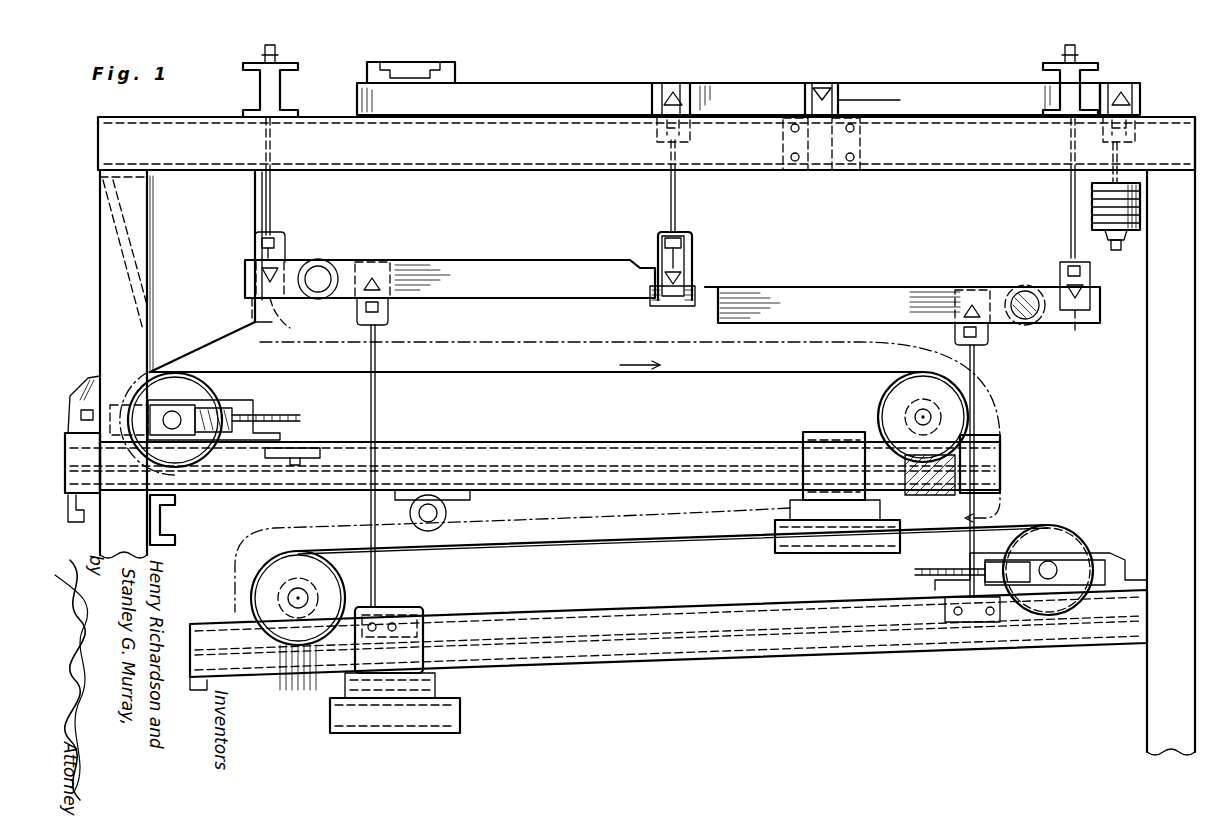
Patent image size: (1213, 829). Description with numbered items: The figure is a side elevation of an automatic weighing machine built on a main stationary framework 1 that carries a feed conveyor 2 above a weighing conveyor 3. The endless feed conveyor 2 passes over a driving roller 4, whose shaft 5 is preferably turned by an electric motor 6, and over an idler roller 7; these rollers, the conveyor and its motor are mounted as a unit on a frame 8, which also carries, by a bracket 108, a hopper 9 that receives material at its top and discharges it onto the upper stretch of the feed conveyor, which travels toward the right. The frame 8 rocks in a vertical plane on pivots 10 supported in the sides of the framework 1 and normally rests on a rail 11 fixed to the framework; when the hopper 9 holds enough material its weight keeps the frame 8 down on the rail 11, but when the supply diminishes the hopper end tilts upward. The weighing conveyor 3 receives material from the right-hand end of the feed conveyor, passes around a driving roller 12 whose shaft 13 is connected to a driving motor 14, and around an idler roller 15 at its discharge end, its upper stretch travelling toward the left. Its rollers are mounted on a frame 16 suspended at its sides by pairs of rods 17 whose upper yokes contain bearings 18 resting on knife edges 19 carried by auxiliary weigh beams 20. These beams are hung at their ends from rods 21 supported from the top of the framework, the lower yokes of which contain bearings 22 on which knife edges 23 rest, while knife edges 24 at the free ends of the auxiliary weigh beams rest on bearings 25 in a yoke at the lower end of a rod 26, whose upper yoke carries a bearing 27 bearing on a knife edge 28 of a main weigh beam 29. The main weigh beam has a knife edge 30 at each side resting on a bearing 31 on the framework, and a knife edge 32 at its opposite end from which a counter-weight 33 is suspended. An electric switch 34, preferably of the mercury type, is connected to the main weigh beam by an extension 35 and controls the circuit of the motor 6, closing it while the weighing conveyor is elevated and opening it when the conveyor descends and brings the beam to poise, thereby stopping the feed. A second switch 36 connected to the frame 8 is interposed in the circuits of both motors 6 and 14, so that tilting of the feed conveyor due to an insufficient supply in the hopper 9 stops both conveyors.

The framework 1 is at (108, 232).
The feed conveyor 2 is at (478, 368).
The weighing conveyor 3 is at (560, 545).
The driving roller 4 is at (897, 395).
The shaft 5 is at (918, 417).
The electric motor 6 is at (818, 436).
The idler roller 7 is at (195, 388).
The frame 8 is at (595, 452).
The hopper 9 is at (255, 320).
The pivots 10 is at (450, 513).
The rail 11 is at (176, 518).
The driving roller 12 is at (335, 575).
The shaft 13 is at (290, 597).
The driving motor 14 is at (410, 612).
The idler roller 15 is at (1060, 530).
The frame 16 is at (720, 650).
The rods 17 is at (388, 428).
The bearings 18 is at (380, 262).
The knife edges 19 is at (365, 290).
The auxiliary weigh beams 20 is at (490, 258).
The rods 21 is at (272, 192).
The bearings 22 is at (1075, 320).
The knife edges 23 is at (278, 270).
The knife edges 24 is at (690, 268).
The bearings 25 is at (665, 300).
The rod 26 is at (677, 205).
The bearing 27 is at (672, 90).
The knife edge 28 is at (678, 96).
The main weigh beam 29 is at (785, 90).
The knife edge 30 is at (826, 86).
The bearing 31 is at (845, 98).
The knife edge 32 is at (1120, 85).
The counter-weight 33 is at (1130, 242).
The electric switch 34 is at (415, 70).
The extension 35 is at (355, 92).
The switch 36 is at (290, 460).
The bracket 108 is at (95, 380).